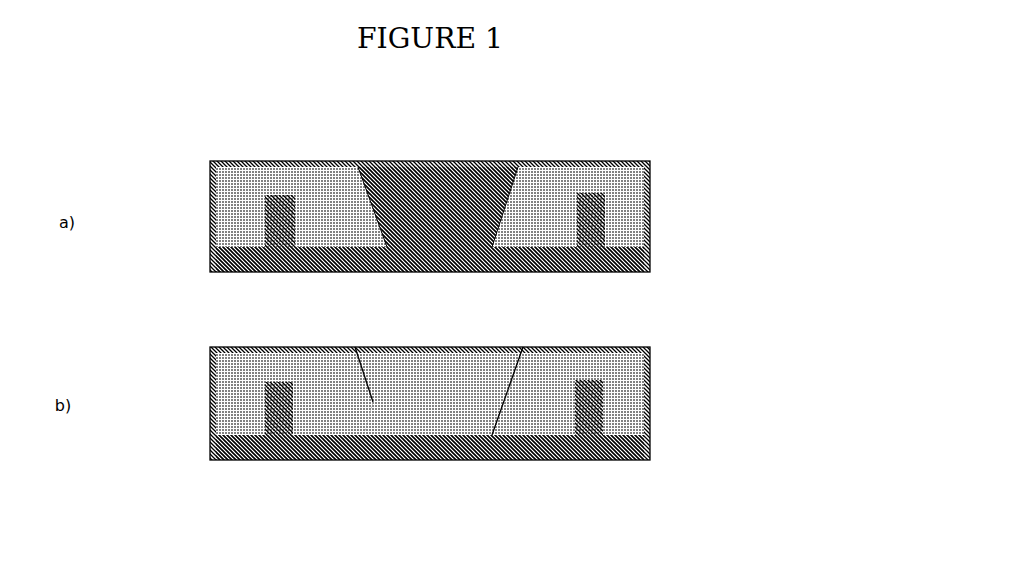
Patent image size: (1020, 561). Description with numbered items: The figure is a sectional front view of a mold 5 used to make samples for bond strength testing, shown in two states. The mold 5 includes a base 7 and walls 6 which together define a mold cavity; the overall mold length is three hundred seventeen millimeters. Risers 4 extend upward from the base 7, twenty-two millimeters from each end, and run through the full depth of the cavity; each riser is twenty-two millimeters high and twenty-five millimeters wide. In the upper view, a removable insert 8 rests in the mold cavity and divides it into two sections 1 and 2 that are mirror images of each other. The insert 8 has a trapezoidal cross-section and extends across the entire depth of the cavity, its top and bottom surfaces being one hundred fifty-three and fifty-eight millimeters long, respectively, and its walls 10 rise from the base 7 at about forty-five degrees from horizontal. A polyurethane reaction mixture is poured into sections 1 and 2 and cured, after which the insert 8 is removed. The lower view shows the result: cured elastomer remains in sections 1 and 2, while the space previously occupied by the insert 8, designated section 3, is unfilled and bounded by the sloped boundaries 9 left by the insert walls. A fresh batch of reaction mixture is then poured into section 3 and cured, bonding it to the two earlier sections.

The section 1 is at (322, 180).
The section 2 is at (557, 177).
The section 3 is at (432, 400).
The risers 4 is at (278, 197).
The mold 5 is at (429, 308).
The walls 6 is at (650, 180).
The base 7 is at (247, 265).
The removable insert 8 is at (465, 192).
The boundary line 9 is at (373, 402).
The walls 10 is at (375, 220).